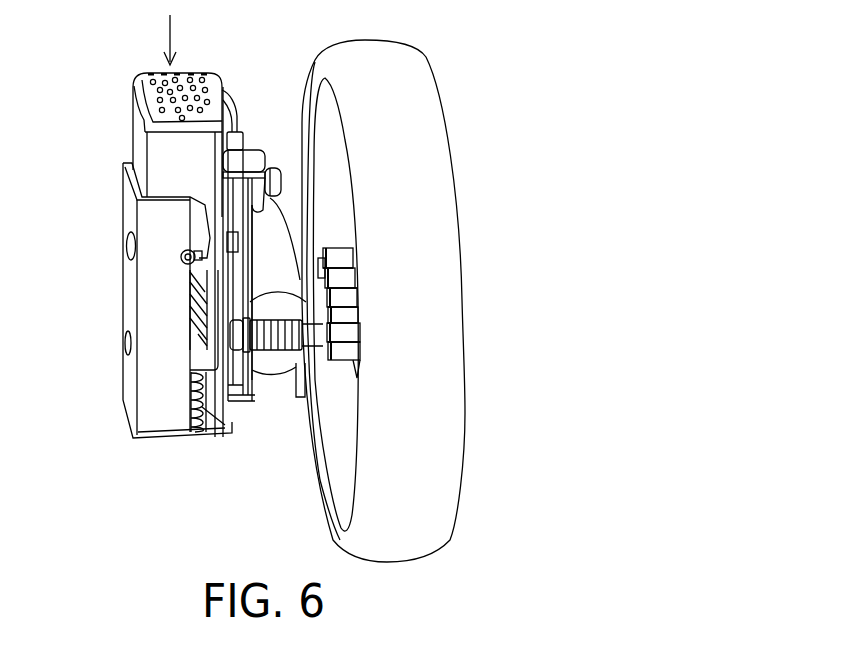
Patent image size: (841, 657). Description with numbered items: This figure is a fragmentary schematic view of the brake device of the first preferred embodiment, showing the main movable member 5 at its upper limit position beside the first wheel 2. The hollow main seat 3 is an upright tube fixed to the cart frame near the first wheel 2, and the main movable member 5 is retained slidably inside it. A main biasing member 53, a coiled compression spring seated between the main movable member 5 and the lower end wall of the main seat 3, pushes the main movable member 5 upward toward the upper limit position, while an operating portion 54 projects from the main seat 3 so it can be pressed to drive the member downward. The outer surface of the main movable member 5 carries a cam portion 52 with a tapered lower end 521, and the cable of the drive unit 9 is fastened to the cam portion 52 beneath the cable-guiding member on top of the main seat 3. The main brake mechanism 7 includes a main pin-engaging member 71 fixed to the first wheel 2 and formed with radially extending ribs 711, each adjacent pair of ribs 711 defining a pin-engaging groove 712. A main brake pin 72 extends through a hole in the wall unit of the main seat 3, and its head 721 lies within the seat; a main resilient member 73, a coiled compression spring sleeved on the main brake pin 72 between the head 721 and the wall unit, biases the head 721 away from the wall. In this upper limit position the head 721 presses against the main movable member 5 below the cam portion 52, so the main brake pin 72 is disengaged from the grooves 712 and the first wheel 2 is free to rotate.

The first wheel 2 is at (447, 88).
The main seat 3 is at (118, 378).
The main movable member 5 is at (128, 75).
The operating portion 54 is at (137, 127).
The drive unit 9 is at (229, 90).
The cam portion 52 is at (237, 284).
The tapered lower end 521 is at (238, 319).
The main biasing member 53 is at (221, 430).
The main brake mechanism 7 is at (287, 433).
The main pin-engaging member 71 is at (330, 240).
The ribs 711 is at (345, 277).
The pin-engaging groove 712 is at (338, 298).
The main brake pin 72 is at (315, 334).
The head 721 is at (233, 334).
The main resilient member 73 is at (284, 350).